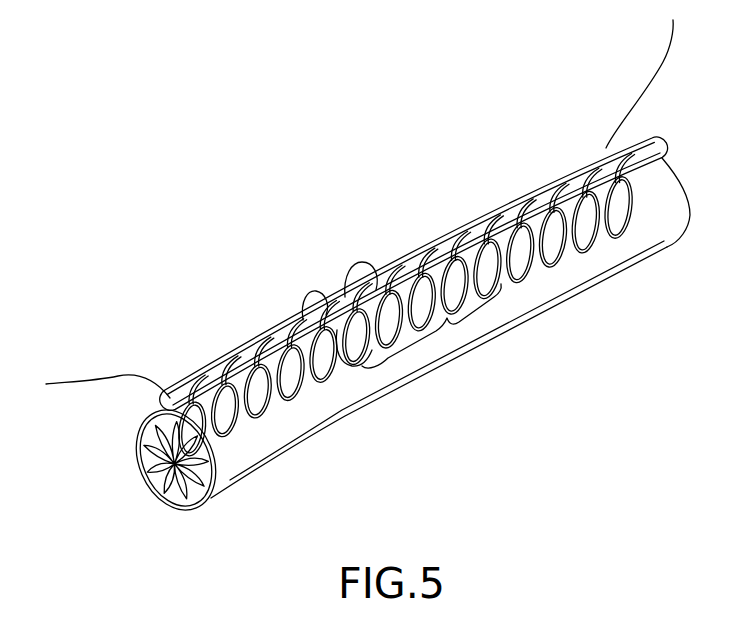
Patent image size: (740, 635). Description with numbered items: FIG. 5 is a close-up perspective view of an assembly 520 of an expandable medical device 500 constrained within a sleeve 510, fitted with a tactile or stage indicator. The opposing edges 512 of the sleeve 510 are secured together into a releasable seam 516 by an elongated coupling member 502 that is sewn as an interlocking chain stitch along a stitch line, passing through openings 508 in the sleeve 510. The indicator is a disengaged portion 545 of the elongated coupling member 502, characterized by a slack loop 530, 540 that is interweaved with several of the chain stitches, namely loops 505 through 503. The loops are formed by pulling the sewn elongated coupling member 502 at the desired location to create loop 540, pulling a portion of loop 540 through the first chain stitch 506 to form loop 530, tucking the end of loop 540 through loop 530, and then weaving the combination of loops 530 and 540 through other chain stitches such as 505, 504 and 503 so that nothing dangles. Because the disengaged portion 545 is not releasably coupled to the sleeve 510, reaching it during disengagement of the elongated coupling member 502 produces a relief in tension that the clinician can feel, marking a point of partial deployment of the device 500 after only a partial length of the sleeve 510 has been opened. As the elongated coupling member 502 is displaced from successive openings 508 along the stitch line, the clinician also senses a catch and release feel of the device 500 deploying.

The device 500 is at (177, 495).
The elongated coupling member 502 is at (138, 372).
The chain stitch 503 is at (500, 212).
The chain stitch 504 is at (471, 230).
The chain stitch 505 is at (405, 276).
The first chain stitch 506 is at (358, 364).
The openings 508 is at (293, 328).
The sleeve 510 is at (668, 210).
The opposing edges 512 is at (568, 165).
The releasable seam 516 is at (224, 362).
The assembly 520 is at (395, 112).
The slack loop 530 is at (413, 336).
The slack loop 540 is at (508, 277).
The disengaged portion 545 is at (431, 326).